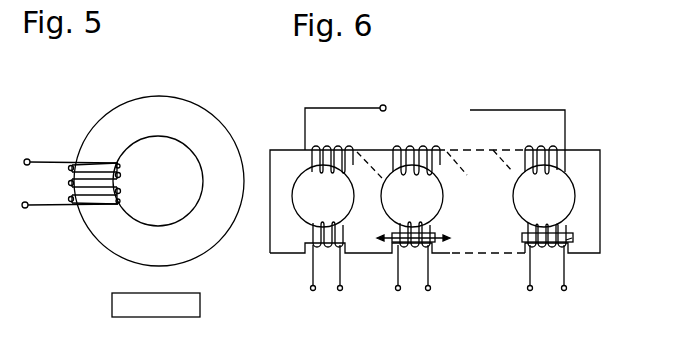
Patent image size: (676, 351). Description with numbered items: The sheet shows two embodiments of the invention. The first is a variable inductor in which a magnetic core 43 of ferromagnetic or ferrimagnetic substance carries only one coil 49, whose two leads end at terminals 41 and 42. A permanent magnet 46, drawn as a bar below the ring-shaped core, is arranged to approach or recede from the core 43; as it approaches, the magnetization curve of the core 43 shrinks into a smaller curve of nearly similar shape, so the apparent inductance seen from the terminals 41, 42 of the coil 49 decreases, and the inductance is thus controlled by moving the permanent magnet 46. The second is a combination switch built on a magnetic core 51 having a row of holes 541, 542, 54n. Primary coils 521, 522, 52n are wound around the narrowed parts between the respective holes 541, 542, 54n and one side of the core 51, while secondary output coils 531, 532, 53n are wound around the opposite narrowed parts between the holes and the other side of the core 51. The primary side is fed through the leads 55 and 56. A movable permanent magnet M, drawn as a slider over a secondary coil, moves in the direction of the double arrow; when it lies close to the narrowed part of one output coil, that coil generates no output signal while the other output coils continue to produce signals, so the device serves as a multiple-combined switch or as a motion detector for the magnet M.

In FIG. 5, the terminal 41 is at (27, 159).
In FIG. 5, the terminal 42 is at (25, 208).
In FIG. 5, the magnetic core 43 is at (100, 122).
In FIG. 5, the permanent magnet 46 is at (128, 306).
In FIG. 5, the coil 49 is at (118, 182).
In FIG. 6, the magnetic core 51 is at (280, 158).
In FIG. 6, the primary coil 521 is at (325, 146).
In FIG. 6, the primary coil 522 is at (408, 144).
In FIG. 6, the primary coil 52n is at (534, 140).
In FIG. 6, the secondary coil 531 is at (311, 262).
In FIG. 6, the secondary coil 532 is at (415, 248).
In FIG. 6, the secondary coil 53n is at (548, 248).
In FIG. 6, the hole 541 is at (310, 200).
In FIG. 6, the hole 542 is at (406, 200).
In FIG. 6, the hole 54n is at (532, 203).
In FIG. 6, the input terminal 55 is at (386, 105).
In FIG. 6, the input terminal 56 is at (467, 108).
In FIG. 6, the movable permanent magnet M is at (446, 228).